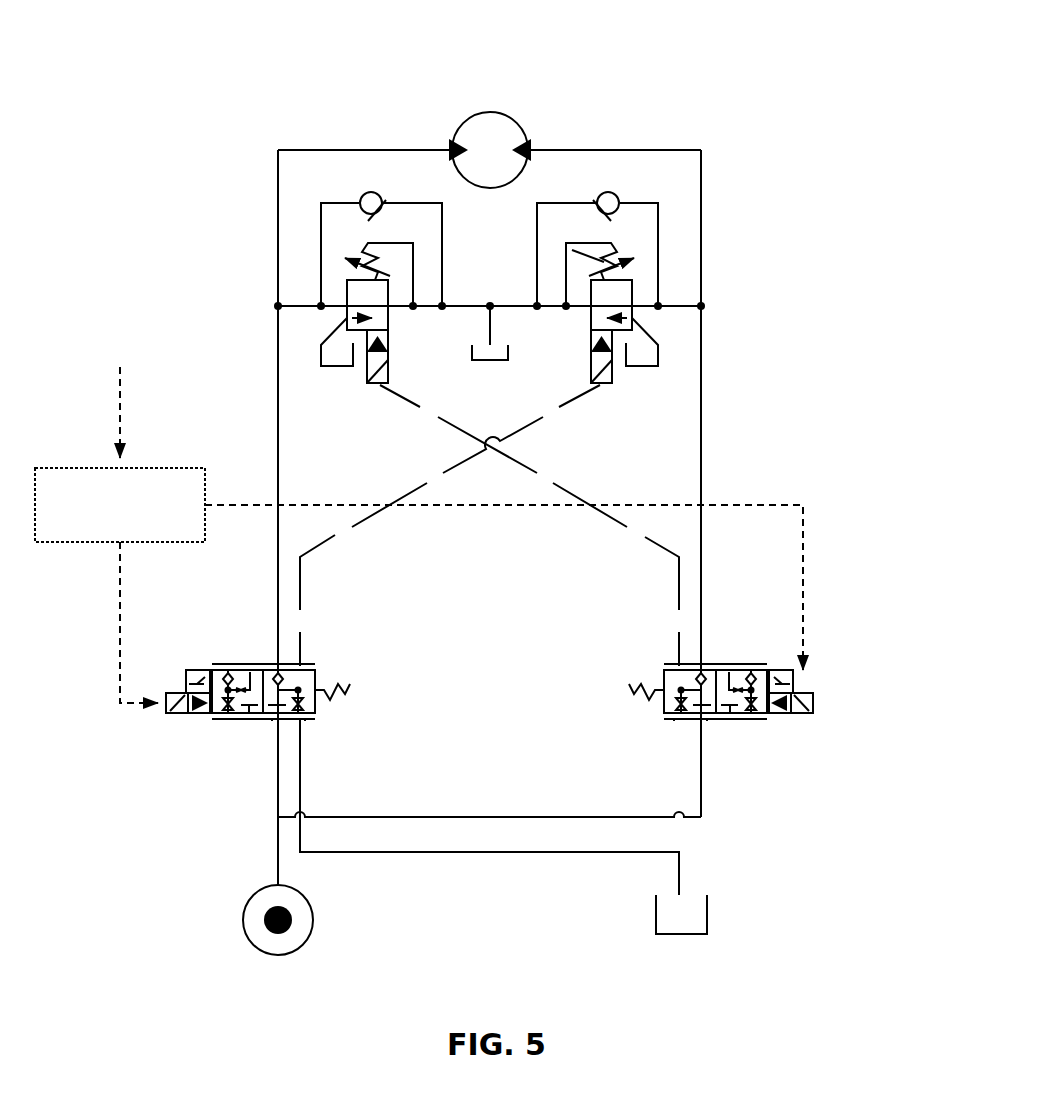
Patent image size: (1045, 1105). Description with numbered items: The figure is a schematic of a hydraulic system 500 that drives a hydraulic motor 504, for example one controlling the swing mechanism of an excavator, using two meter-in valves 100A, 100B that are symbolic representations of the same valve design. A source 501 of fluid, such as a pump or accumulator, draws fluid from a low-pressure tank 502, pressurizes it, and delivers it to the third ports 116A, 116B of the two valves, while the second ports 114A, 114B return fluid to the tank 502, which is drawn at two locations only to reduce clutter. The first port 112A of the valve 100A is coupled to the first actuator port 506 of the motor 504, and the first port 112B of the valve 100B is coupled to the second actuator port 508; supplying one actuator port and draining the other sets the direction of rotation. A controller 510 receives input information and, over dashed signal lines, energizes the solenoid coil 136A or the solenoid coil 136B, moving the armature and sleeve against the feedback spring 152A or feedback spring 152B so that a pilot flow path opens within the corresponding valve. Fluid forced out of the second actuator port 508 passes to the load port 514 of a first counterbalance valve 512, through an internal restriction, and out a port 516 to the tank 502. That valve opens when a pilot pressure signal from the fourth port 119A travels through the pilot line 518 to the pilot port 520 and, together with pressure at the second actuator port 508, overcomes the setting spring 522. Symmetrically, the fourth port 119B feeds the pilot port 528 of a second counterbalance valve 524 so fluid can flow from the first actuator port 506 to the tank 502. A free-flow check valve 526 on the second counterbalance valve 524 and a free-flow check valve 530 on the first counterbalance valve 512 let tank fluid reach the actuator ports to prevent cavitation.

The hydraulic system 500 is at (211, 82).
The source of fluid 501 is at (313, 920).
The tank 502 is at (497, 360).
The motor 504 is at (497, 108).
The first actuator port 506 is at (452, 140).
The second actuator port 508 is at (530, 141).
The controller 510 is at (419, 517).
The first counterbalance valve 512 is at (627, 390).
The load port 514 is at (708, 300).
The port 516 is at (533, 300).
The pilot line 518 is at (452, 472).
The pilot port 520 is at (602, 392).
The setting spring 522 is at (606, 252).
The second counterbalance valve 524 is at (352, 392).
The free-flow check valve 526 is at (367, 186).
The pilot port 528 is at (377, 392).
The free-flow check valve 530 is at (610, 186).
The valve 100A is at (249, 691).
The valve 100B is at (738, 696).
The first port 112A is at (272, 665).
The first port 112B is at (708, 665).
The second port 114A is at (307, 724).
The second port 114B is at (673, 724).
The third port 116A is at (273, 724).
The third port 116B is at (708, 724).
The fourth port 119A is at (300, 663).
The fourth port 119B is at (675, 665).
The solenoid coil 136A is at (176, 688).
The solenoid coil 136B is at (820, 700).
The feedback spring 152A is at (324, 688).
The feedback spring 152B is at (650, 688).